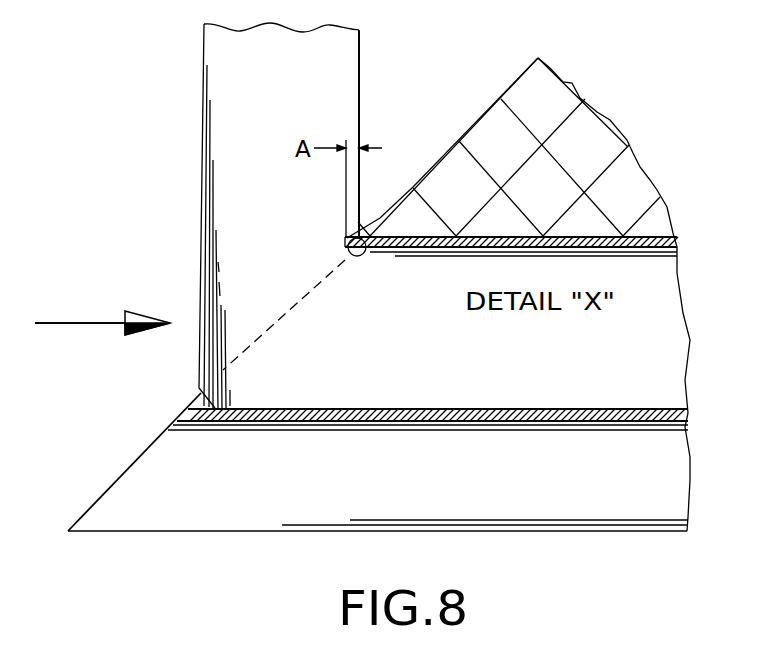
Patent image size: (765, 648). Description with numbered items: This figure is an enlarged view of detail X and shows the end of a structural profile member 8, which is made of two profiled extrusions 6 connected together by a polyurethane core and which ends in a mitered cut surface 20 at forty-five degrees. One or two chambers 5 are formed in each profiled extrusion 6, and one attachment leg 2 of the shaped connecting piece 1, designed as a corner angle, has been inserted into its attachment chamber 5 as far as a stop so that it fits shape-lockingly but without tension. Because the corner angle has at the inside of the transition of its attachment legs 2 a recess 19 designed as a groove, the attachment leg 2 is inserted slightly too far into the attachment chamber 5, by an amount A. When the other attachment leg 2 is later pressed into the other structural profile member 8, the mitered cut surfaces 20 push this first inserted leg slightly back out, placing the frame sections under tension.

The shaped connecting piece 1 is at (196, 215).
The attachment leg 2 is at (361, 48).
The attachment chamber 5 is at (414, 406).
The profiled extrusion 6 is at (518, 423).
The structural profile member 8 is at (556, 92).
The recess 19 is at (349, 260).
The mitered cut surface 20 is at (162, 433).